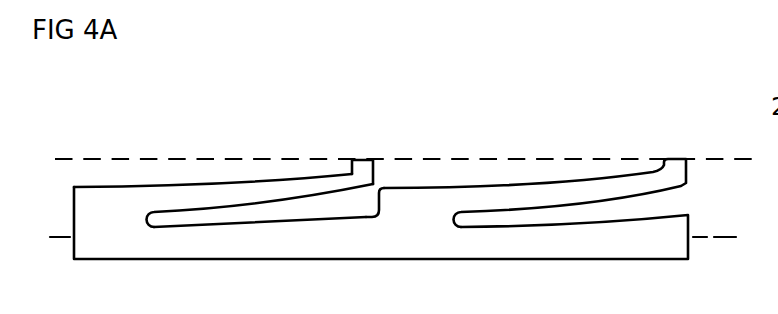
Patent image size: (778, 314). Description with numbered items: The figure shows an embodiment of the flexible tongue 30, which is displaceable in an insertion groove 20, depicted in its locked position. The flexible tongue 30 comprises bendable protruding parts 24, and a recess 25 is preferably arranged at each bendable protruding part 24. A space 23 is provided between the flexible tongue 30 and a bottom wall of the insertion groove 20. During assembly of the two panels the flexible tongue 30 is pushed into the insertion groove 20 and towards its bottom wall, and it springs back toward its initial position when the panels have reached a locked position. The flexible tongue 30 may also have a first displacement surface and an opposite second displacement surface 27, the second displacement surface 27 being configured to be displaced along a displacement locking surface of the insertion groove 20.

The insertion groove 20 is at (380, 197).
The space 23 is at (125, 179).
The bendable protruding parts 24 is at (328, 180).
The recess 25 is at (363, 207).
The second displacement surface 27 is at (777, 222).
The flexible tongue 30 is at (555, 243).